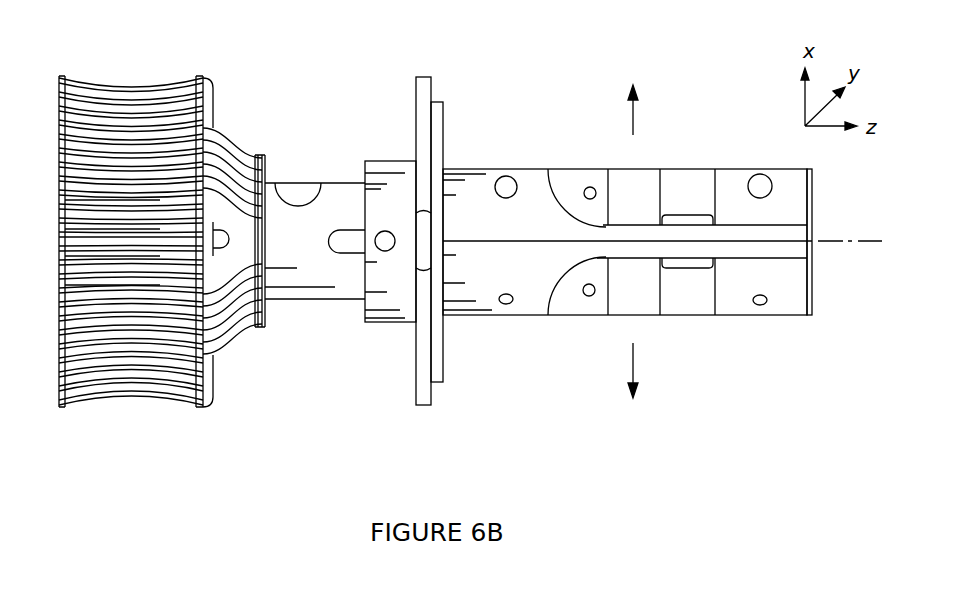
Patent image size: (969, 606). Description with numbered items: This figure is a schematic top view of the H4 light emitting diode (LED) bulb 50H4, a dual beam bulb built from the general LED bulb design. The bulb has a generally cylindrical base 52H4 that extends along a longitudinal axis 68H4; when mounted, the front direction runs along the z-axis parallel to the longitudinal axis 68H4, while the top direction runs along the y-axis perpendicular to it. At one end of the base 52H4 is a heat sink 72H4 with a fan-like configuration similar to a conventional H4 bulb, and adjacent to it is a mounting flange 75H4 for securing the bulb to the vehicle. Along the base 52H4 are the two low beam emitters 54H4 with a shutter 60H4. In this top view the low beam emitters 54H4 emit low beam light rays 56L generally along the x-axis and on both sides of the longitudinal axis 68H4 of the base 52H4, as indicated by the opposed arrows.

The heat sink 72H4 is at (118, 94).
The mounting flange 75H4 is at (423, 395).
The H4 light emitting diode (LED) bulb 50H4 is at (670, 195).
The base 52H4 is at (812, 222).
The low beam emitter 54H4 is at (618, 325).
The low beam light rays 56L is at (637, 120).
The shutter 60H4 is at (694, 285).
The longitudinal axis 68H4 is at (820, 243).